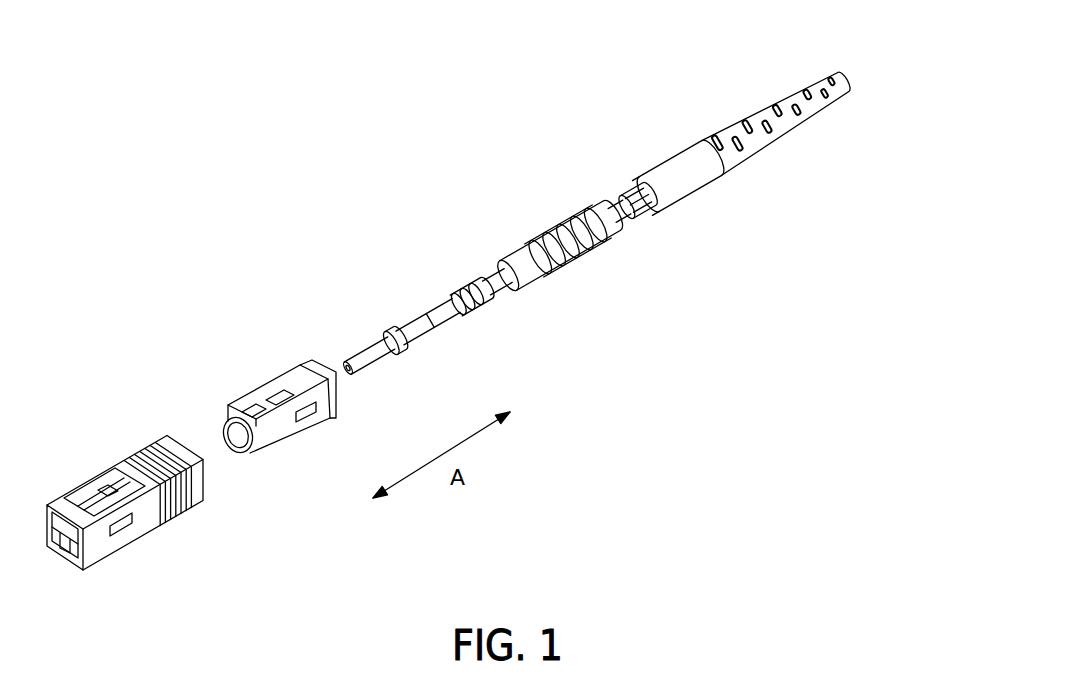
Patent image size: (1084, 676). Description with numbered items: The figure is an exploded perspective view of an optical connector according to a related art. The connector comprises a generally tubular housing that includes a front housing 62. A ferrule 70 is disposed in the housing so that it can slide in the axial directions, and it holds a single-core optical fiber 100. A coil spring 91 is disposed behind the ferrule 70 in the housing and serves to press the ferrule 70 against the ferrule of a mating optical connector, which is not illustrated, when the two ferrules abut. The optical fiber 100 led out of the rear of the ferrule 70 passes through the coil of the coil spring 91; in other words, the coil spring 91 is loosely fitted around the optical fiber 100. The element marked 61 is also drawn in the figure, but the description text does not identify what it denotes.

The spring 61 is at (556, 232).
The front housing 62 is at (260, 384).
The ferrule 70 is at (366, 350).
The coil spring 91 is at (461, 288).
The optical fiber 100 is at (482, 285).